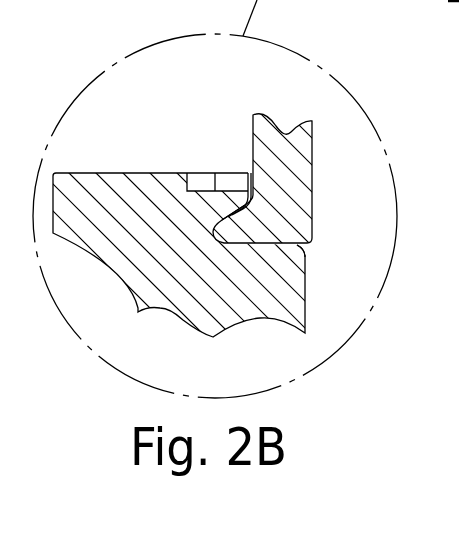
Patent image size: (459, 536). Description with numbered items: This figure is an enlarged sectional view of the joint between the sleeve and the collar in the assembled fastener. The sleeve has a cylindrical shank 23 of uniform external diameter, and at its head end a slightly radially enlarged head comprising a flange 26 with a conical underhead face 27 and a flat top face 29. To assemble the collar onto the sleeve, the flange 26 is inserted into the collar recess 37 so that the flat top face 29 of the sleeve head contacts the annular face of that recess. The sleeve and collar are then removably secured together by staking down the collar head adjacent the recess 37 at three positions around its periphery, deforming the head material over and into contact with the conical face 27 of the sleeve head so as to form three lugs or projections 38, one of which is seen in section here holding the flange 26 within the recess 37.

The cylindrical shank 23 is at (300, 163).
The flange 26 is at (227, 225).
The conical underhead face 27 is at (250, 172).
The flat top face 29 is at (307, 244).
The collar recess 37 is at (243, 178).
The lugs or projections 38 is at (236, 190).